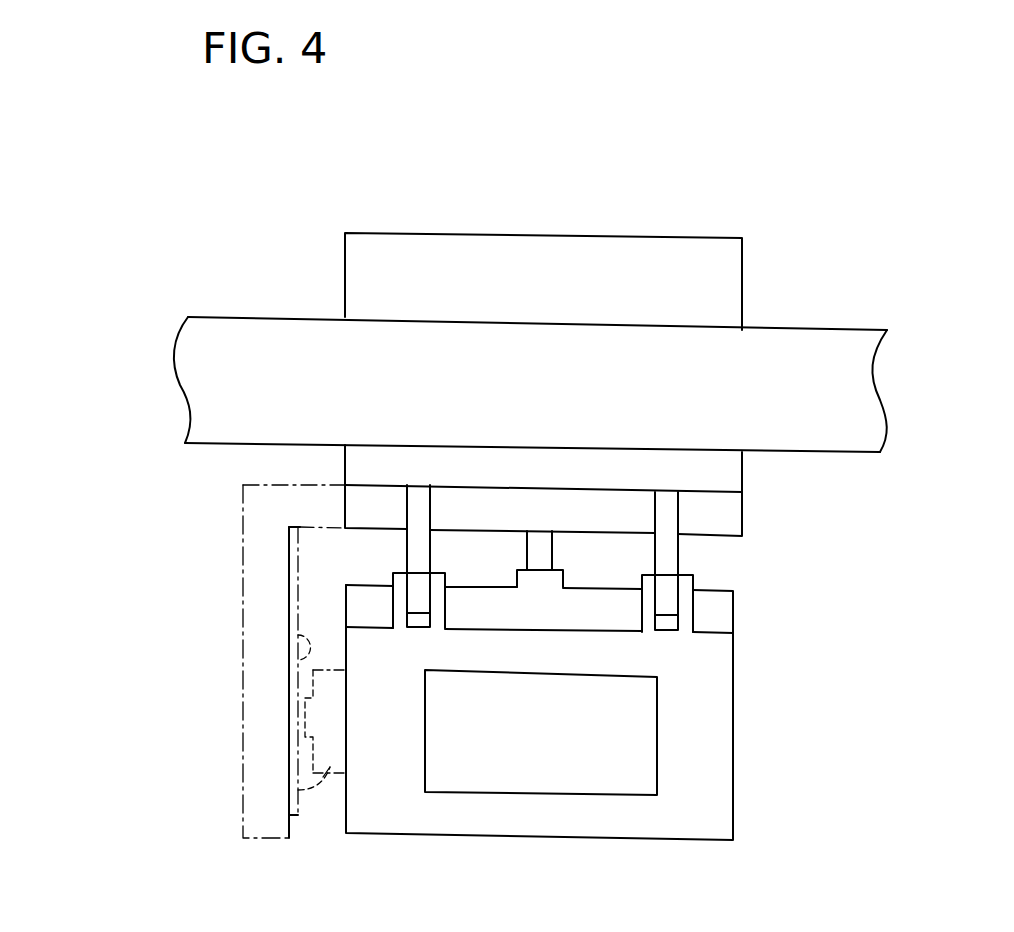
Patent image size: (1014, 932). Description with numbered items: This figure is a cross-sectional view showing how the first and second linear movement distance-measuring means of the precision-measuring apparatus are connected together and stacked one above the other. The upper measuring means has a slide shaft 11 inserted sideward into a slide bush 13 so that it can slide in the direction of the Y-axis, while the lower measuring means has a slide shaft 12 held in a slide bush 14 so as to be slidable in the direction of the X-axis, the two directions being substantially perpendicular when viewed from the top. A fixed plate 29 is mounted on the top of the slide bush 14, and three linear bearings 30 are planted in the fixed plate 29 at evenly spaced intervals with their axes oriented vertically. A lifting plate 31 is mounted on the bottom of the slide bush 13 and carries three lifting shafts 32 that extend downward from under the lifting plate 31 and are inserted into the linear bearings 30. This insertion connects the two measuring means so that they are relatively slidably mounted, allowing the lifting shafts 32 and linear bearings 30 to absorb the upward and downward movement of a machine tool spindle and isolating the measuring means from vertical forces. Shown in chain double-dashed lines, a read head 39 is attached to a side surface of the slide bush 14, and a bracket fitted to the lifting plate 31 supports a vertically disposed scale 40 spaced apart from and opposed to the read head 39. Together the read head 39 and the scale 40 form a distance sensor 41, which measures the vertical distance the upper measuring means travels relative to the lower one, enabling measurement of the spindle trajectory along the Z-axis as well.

The first slide shaft 11 is at (793, 350).
The second slide shaft 12 is at (628, 743).
The first slide bush 13 is at (705, 268).
The second slide bush 14 is at (713, 690).
The fixed plate 29 is at (718, 612).
The linear bearing 30 is at (807, 552).
The lifting plate 31 is at (483, 510).
The lifting shaft 32 is at (417, 495).
The read head 39 is at (300, 793).
The scale 40 is at (300, 660).
The distance sensor 41 is at (90, 635).